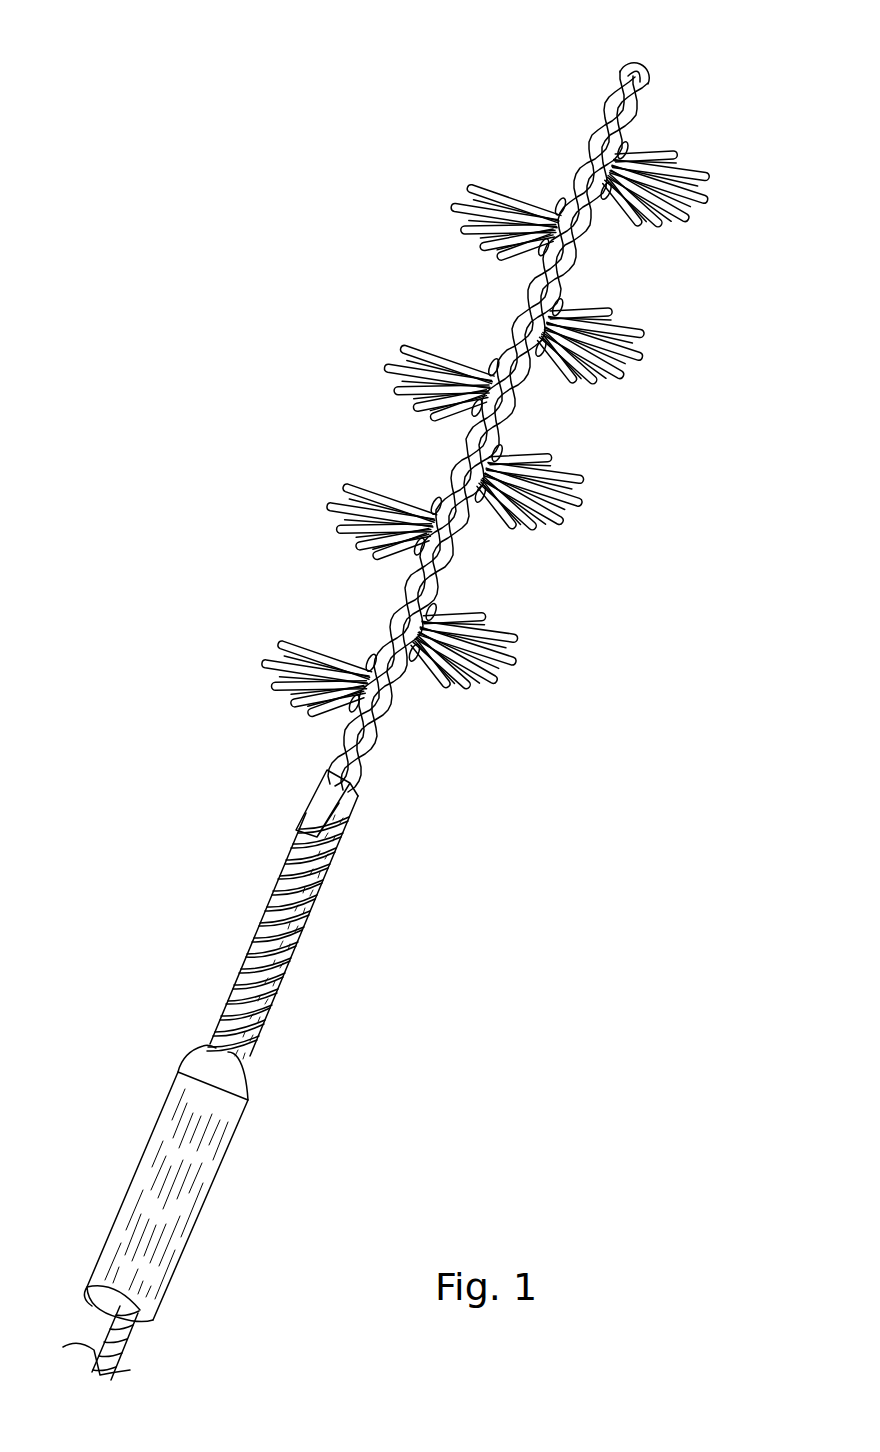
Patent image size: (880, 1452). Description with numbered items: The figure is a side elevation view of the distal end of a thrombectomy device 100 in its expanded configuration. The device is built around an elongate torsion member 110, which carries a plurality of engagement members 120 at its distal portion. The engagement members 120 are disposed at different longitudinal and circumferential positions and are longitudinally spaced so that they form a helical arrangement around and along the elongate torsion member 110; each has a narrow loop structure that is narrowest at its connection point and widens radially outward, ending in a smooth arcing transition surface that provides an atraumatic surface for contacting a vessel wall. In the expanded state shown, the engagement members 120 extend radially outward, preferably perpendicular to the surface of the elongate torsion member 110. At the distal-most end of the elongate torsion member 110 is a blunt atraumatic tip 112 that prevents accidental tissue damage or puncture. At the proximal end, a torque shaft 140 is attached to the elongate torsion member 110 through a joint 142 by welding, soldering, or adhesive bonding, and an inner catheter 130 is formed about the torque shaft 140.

The thrombectomy device 100 is at (195, 322).
The elongate torsion member 110 is at (382, 632).
The blunt atraumatic tip 112 is at (650, 54).
The engagement members 120 is at (383, 355).
The inner catheter 130 is at (130, 1207).
The torque shaft 140 is at (215, 1013).
The joint 142 is at (330, 782).